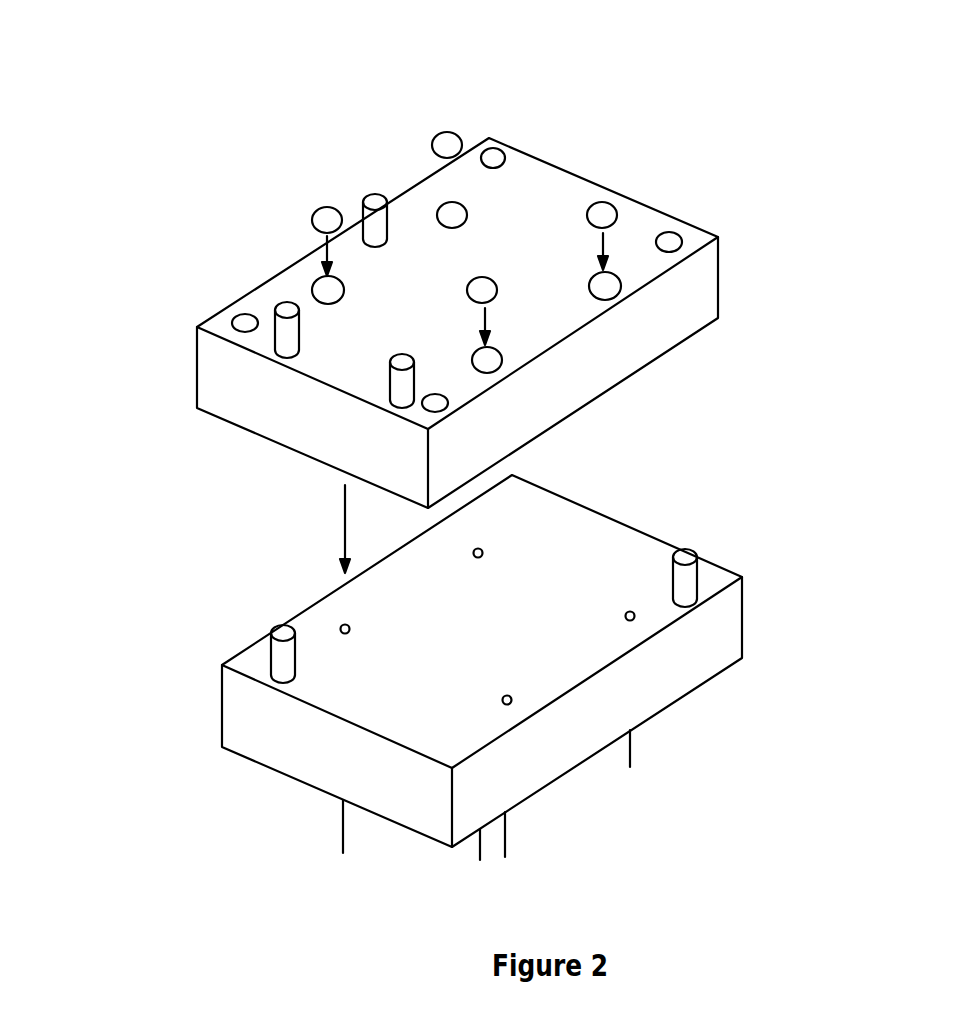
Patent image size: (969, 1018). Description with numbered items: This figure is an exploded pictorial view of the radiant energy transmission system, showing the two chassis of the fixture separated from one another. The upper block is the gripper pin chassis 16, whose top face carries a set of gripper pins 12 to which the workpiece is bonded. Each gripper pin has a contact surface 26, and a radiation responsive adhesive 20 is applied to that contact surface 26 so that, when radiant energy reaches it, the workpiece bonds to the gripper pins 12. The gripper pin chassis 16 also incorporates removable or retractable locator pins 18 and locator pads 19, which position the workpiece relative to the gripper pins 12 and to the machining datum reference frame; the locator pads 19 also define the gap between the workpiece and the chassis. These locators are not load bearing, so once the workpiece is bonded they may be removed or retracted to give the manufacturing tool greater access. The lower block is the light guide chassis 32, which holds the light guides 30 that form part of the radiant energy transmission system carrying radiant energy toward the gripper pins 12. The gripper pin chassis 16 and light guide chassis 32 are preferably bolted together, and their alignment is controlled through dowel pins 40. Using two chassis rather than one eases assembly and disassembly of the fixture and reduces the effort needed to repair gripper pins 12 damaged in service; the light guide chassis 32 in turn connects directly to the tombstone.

The gripper pins 12 is at (320, 278).
The gripper pin chassis 16 is at (298, 425).
The locator pins 18 is at (278, 312).
The locator pads 19 is at (581, 182).
The radiation responsive adhesive 20 is at (594, 213).
The contact surface 26 is at (592, 286).
The light guides 30 is at (474, 553).
The light guide chassis 32 is at (260, 752).
The dowel pins 40 is at (270, 662).